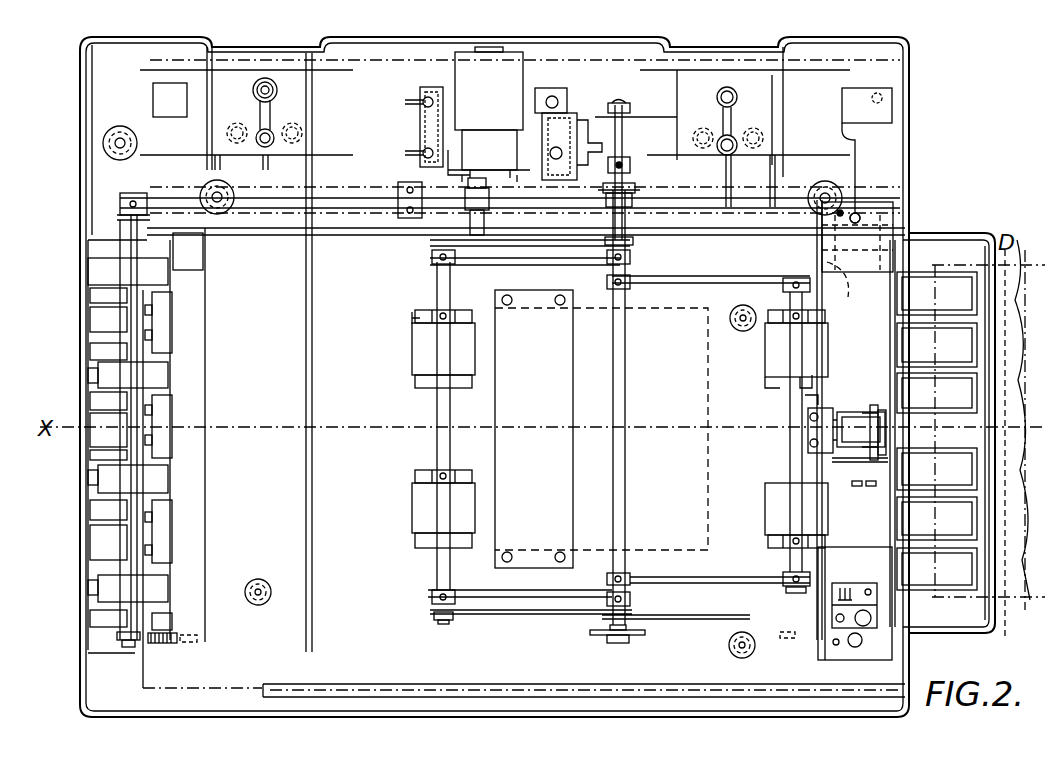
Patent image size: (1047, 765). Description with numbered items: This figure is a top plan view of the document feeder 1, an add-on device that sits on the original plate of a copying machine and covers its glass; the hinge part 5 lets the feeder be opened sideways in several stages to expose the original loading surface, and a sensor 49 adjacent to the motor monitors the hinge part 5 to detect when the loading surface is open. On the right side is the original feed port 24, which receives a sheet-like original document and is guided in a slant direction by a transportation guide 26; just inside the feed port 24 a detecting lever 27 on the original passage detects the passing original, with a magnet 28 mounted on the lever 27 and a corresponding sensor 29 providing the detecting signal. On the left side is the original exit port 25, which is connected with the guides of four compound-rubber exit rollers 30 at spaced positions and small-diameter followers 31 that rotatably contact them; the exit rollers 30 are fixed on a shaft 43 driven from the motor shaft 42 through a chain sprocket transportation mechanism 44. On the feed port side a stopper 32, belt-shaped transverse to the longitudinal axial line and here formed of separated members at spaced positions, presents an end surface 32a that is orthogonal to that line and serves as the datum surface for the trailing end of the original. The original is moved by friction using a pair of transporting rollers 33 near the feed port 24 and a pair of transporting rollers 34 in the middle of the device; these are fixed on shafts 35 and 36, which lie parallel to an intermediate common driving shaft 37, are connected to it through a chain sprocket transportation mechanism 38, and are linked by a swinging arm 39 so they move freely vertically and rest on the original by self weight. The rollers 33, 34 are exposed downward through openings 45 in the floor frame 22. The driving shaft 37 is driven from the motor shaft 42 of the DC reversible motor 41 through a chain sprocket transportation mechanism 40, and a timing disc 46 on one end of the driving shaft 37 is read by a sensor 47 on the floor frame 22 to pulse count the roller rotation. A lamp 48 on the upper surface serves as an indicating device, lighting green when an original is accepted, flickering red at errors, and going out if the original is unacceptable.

The document feeder 1 is at (917, 108).
The hinge part 5 is at (275, 75).
The floor frame 22 is at (358, 387).
The original feed port 24 is at (920, 422).
The original exit port 25 is at (157, 373).
The transportation guide 26 is at (957, 253).
The detecting lever 27 is at (887, 432).
The magnet 28 is at (840, 425).
The sensor 29 is at (826, 410).
The exit rollers 30 is at (157, 483).
The followers 31 is at (95, 267).
The stopper 32 is at (863, 255).
The end surface 32a is at (855, 292).
The transporting rollers 33 is at (778, 349).
The transporting rollers 34 is at (462, 347).
The shaft 35 is at (797, 445).
The shaft 36 is at (440, 442).
The driving shaft 37 is at (622, 518).
The chain sprocket transportation mechanism 38 is at (585, 268).
The swinging arm 39 is at (540, 258).
The chain sprocket transportation mechanism 40 is at (528, 197).
The DC reversible motor 41 is at (503, 96).
The motor shaft 42 is at (425, 232).
The shaft 43 is at (135, 318).
The chain sprocket transportation mechanism 44 is at (283, 208).
The openings 45 is at (412, 318).
The timing disc 46 is at (633, 157).
The sensor 47 is at (598, 142).
The lamp 48 is at (840, 622).
The sensor 49 is at (407, 182).